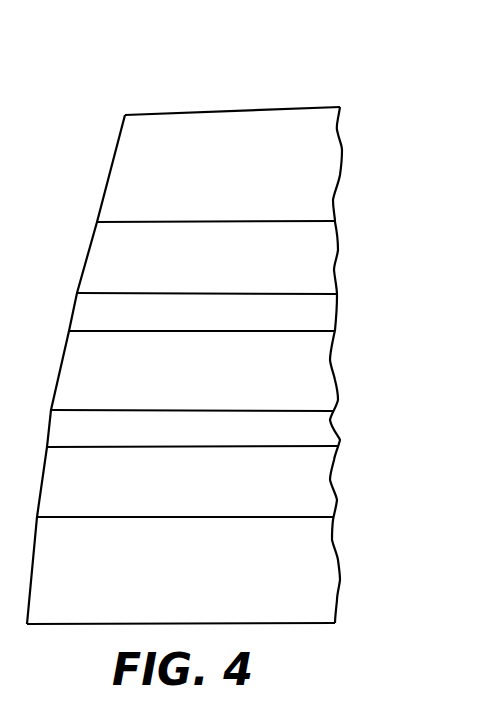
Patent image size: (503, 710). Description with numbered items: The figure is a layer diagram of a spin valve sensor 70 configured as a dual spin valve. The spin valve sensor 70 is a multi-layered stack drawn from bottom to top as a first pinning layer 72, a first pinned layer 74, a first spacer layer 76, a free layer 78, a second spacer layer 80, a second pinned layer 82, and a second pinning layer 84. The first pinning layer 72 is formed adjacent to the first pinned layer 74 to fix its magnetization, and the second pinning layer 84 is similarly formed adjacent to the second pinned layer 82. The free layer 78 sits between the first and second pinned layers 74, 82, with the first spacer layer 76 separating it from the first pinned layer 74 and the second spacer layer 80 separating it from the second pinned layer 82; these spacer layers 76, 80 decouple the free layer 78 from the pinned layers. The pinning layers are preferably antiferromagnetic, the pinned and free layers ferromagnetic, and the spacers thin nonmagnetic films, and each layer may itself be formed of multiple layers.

The spin valve sensor 70 is at (343, 76).
The first pinning layer 72 is at (298, 572).
The first pinned layer 74 is at (302, 486).
The first spacer layer 76 is at (300, 438).
The free layer 78 is at (303, 386).
The second spacer layer 80 is at (316, 321).
The second pinned layer 82 is at (313, 269).
The second pinning layer 84 is at (307, 173).